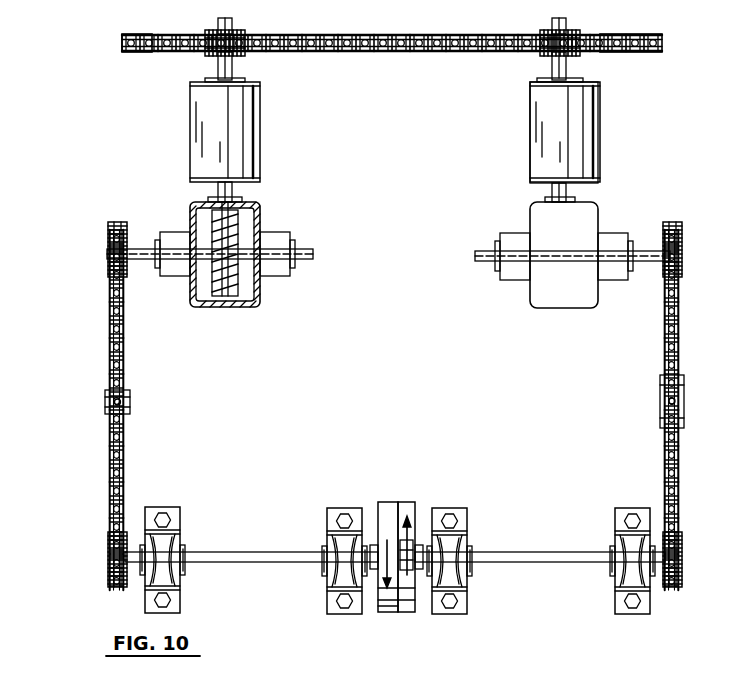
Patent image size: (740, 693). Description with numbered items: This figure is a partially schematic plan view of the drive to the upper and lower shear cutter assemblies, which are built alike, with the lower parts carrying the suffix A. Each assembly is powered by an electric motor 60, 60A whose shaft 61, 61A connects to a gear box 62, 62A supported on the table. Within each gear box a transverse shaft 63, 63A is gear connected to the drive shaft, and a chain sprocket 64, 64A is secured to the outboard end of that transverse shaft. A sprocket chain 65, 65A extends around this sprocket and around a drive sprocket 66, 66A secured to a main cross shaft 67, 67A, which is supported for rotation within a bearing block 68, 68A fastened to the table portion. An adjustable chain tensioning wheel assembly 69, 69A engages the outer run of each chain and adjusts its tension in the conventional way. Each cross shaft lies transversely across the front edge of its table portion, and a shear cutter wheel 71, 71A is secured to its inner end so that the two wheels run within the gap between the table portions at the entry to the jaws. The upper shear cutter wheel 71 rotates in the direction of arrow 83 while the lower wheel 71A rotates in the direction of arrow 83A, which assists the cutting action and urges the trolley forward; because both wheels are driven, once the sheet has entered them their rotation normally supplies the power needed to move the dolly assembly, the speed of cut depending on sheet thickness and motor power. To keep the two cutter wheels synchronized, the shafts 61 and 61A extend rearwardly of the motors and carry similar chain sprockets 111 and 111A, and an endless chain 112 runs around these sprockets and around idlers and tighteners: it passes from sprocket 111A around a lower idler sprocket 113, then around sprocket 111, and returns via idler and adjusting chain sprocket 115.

The electric motor 60 is at (245, 120).
The electric motor 60A is at (540, 123).
The shaft 61 is at (220, 64).
The shaft 61A is at (555, 66).
The gear box 62 is at (266, 214).
The gear box 62A is at (537, 226).
The transverse shaft 63 is at (315, 250).
The transverse shaft 63A is at (476, 258).
The chain sprocket 64 is at (125, 235).
The chain sprocket 64A is at (666, 235).
The sprocket chain 65 is at (126, 350).
The sprocket chain 65A is at (664, 350).
The drive sprocket 66 is at (106, 548).
The drive sprocket 66A is at (680, 560).
The main cross shaft 67 is at (214, 560).
The main cross shaft 67A is at (503, 560).
The bearing block 68 is at (340, 520).
The bearing block 68A is at (615, 520).
The adjustable chain tensioning wheel assembly 69 is at (128, 394).
The adjustable chain tensioning wheel assembly 69A is at (662, 392).
The shear cutter wheel 71 is at (386, 610).
The shear cutter wheel 71A is at (410, 604).
The arrow 83 is at (386, 535).
The arrow 83A is at (409, 530).
The chain sprocket 111 is at (230, 32).
The chain sprocket 111A is at (548, 32).
The endless chain 112 is at (400, 52).
The lower idler sprocket 113 is at (640, 33).
The idler and adjusting chain sprocket 115 is at (140, 33).